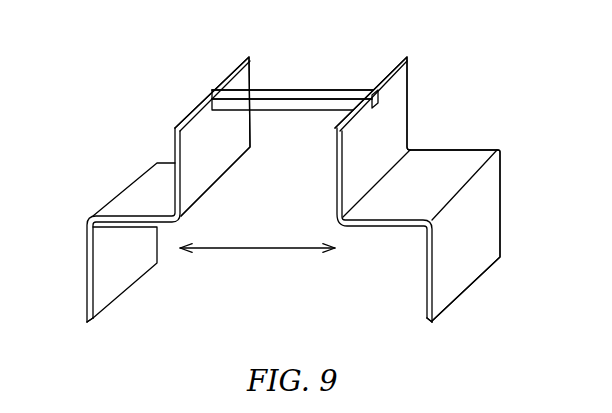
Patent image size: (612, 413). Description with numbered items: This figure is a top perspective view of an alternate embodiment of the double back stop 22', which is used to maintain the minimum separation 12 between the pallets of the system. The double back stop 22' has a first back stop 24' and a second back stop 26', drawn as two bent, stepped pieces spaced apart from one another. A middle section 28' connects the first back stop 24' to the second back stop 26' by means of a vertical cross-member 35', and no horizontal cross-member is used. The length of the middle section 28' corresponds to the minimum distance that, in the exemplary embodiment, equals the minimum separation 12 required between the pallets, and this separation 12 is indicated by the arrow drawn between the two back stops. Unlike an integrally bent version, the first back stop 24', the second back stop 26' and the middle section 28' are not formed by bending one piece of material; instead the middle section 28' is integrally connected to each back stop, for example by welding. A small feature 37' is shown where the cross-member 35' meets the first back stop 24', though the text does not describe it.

The double back stop 22' is at (274, 183).
The second back stop 26' is at (152, 189).
The first back stop 24' is at (434, 189).
The middle section 28' is at (292, 65).
The vertical cross-member 35' is at (293, 71).
The slot 37' is at (418, 85).
The minimum separation 12 is at (258, 248).